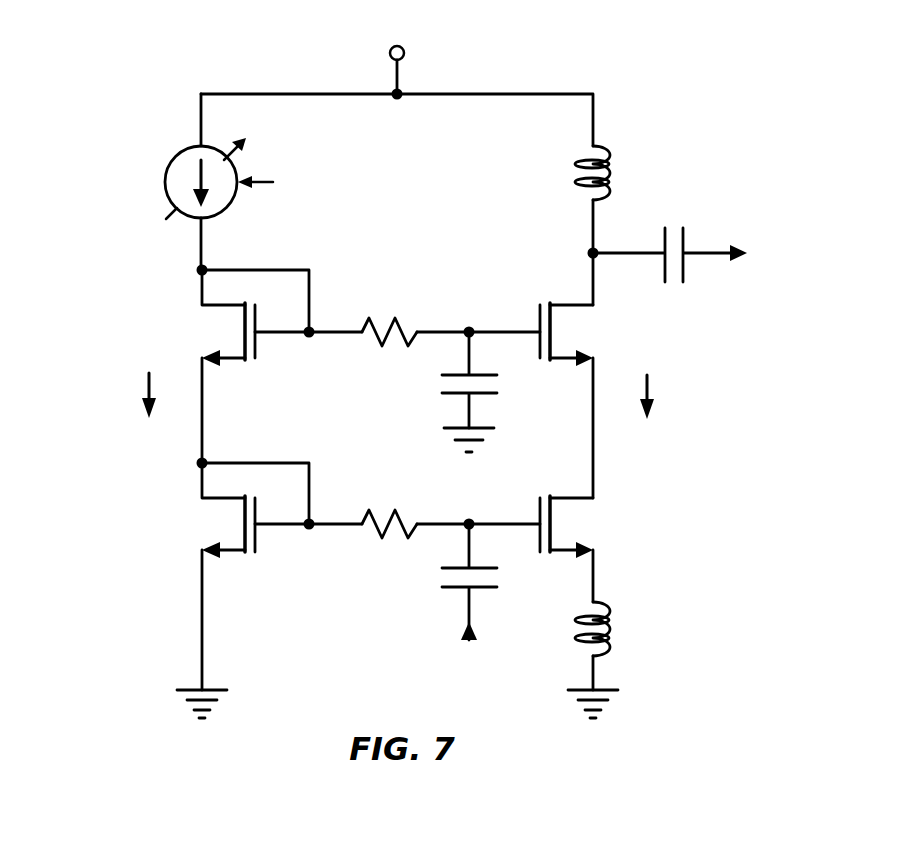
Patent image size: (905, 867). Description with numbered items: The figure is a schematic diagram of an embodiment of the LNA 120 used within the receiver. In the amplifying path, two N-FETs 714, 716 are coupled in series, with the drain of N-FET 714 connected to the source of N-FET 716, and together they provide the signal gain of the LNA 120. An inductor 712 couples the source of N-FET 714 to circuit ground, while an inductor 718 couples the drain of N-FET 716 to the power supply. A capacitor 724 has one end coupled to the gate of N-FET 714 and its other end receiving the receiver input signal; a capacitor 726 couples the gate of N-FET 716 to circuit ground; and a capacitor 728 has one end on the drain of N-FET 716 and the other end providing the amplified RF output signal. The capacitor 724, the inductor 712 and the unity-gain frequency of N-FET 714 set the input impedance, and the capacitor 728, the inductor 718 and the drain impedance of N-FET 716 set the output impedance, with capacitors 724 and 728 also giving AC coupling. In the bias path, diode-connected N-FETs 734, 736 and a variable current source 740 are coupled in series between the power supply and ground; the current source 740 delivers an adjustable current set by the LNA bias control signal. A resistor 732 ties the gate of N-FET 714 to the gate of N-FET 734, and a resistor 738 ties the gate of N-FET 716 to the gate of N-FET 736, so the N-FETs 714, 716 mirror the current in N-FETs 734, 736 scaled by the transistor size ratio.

The LNA 120 is at (156, 34).
The variable current source 740 is at (176, 157).
The N-FET 736 is at (255, 343).
The N-FET 734 is at (255, 533).
The resistor 738 is at (396, 320).
The resistor 732 is at (396, 510).
The capacitor 726 is at (480, 375).
The capacitor 724 is at (480, 568).
The N-FET 716 is at (572, 305).
The N-FET 714 is at (572, 497).
The inductor 718 is at (608, 150).
The inductor 712 is at (608, 605).
The capacitor 728 is at (663, 240).